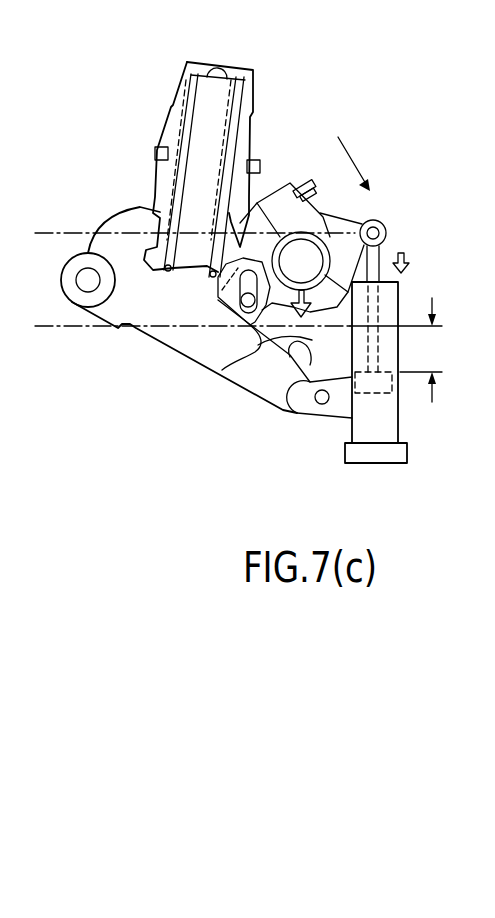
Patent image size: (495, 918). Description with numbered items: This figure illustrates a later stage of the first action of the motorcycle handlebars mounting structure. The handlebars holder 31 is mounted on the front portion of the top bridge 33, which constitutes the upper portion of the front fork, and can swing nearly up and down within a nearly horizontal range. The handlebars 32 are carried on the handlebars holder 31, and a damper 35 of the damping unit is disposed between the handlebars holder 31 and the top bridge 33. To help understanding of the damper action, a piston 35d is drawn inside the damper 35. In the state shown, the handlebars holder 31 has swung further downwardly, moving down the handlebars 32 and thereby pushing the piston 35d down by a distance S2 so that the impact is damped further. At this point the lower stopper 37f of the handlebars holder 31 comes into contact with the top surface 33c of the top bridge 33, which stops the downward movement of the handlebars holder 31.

The handlebars holder 31 is at (318, 176).
The handlebars 32 is at (320, 213).
The top bridge 33 is at (161, 341).
The top surface 33c is at (280, 410).
The damper 35 is at (371, 470).
The piston 35d is at (378, 393).
The lower stopper 37f is at (222, 370).
The distance s2 S2 is at (432, 350).